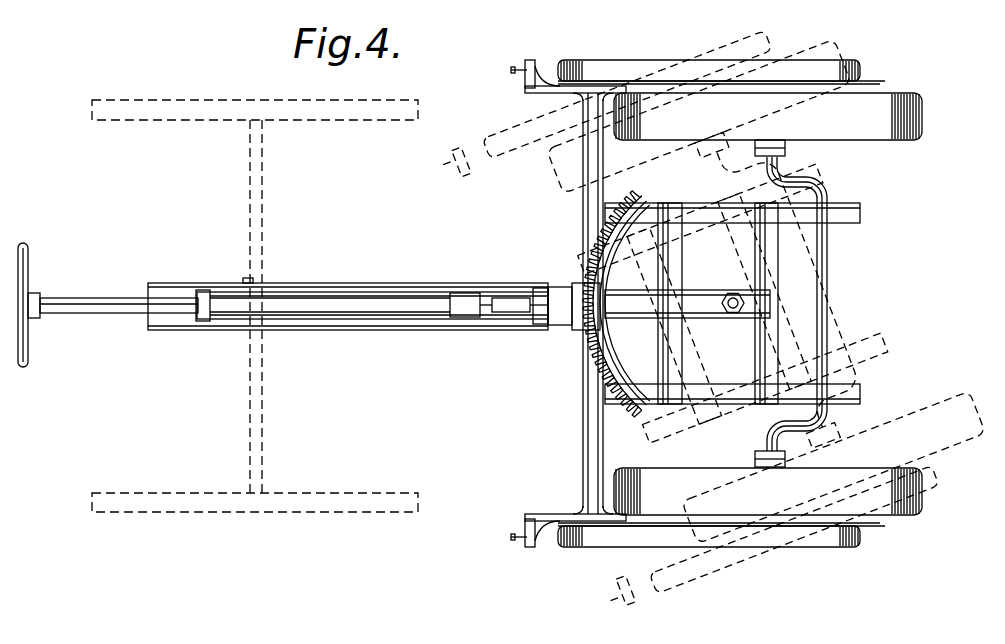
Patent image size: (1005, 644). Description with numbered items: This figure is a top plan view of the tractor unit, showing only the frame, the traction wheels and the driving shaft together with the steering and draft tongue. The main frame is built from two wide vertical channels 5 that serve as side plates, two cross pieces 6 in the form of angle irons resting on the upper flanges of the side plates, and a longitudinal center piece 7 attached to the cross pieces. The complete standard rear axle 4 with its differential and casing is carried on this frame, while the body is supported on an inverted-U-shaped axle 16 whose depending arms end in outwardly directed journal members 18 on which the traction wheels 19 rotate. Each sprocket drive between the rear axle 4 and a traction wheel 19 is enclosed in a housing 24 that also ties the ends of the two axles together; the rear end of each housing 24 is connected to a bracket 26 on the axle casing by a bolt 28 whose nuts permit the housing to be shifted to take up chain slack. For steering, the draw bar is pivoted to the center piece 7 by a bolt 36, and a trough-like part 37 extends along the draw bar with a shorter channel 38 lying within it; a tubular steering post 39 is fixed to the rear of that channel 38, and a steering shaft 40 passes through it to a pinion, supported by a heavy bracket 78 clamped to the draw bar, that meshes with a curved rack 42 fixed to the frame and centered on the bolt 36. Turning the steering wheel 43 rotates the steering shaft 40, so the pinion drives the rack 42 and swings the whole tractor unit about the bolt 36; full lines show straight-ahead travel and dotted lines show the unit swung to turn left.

The rear axle 4 is at (540, 172).
The vertical channels 5 is at (866, 212).
The cross pieces 6 is at (640, 364).
The longitudinal center piece 7 is at (703, 290).
The axle 16 is at (834, 247).
The journal members 18 is at (760, 444).
The traction wheels 19 is at (890, 142).
The housing 24 is at (862, 66).
The bracket 26 is at (538, 86).
The bolt 28 is at (513, 67).
The bolt 36 is at (748, 297).
The trough-like part 37 is at (163, 283).
The channel 38 is at (222, 292).
The tubular steering post 39 is at (77, 302).
The steering shaft 40 is at (350, 302).
The curved rack 42 is at (633, 198).
The steering wheel 43 is at (29, 250).
The bracket 78 is at (583, 305).